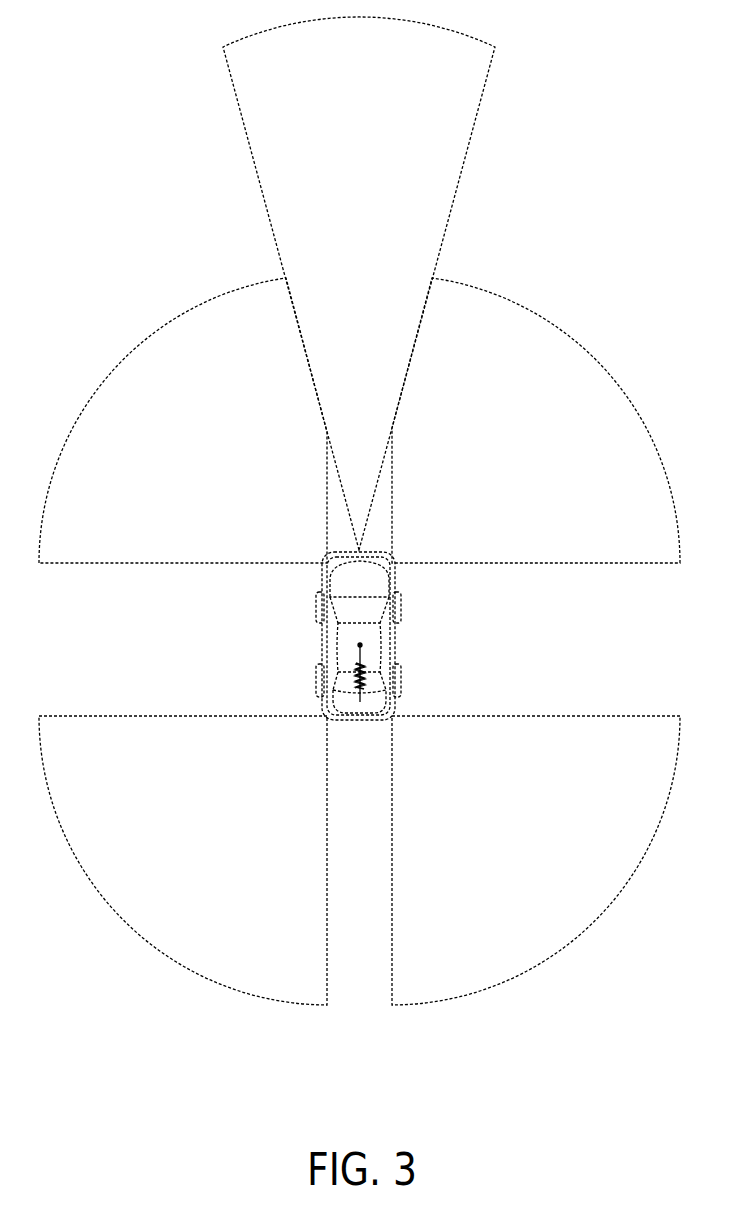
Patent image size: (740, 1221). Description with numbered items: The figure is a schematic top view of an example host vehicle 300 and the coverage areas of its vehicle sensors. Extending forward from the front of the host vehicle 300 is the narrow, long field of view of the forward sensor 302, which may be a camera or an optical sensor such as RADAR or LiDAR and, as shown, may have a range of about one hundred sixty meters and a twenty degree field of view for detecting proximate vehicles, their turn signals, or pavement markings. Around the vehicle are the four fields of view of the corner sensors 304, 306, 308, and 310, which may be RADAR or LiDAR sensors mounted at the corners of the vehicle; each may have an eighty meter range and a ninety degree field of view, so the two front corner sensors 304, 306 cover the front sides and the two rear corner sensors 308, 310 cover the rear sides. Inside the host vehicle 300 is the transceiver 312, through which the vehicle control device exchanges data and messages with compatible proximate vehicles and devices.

The host vehicle 300 is at (322, 638).
The forward sensor 302 is at (338, 206).
The corner sensor 304 is at (223, 469).
The corner sensor 306 is at (496, 469).
The corner sensor 308 is at (180, 816).
The corner sensor 310 is at (497, 816).
The transceiver 312 is at (363, 646).